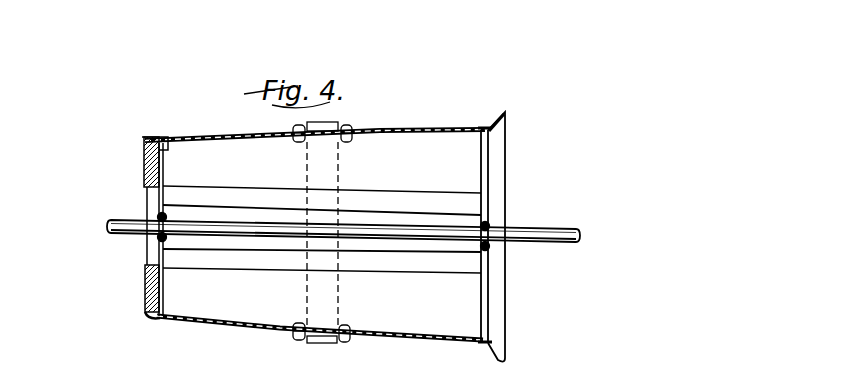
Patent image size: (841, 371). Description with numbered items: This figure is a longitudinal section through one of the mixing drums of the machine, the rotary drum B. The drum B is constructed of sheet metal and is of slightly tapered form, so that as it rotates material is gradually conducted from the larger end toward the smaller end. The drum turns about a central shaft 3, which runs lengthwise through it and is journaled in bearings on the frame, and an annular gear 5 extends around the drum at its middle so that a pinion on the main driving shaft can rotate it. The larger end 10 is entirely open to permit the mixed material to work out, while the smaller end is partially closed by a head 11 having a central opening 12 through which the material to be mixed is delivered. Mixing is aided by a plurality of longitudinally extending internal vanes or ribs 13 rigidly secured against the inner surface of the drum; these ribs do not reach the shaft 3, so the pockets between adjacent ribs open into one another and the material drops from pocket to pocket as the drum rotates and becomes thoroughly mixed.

The rotary drum B is at (197, 127).
The central shaft 3 is at (547, 233).
The annular gear 5 is at (331, 344).
The larger end 10 is at (489, 165).
The head 11 is at (146, 280).
The central opening 12 is at (148, 250).
The internal vanes or ribs 13 is at (457, 305).